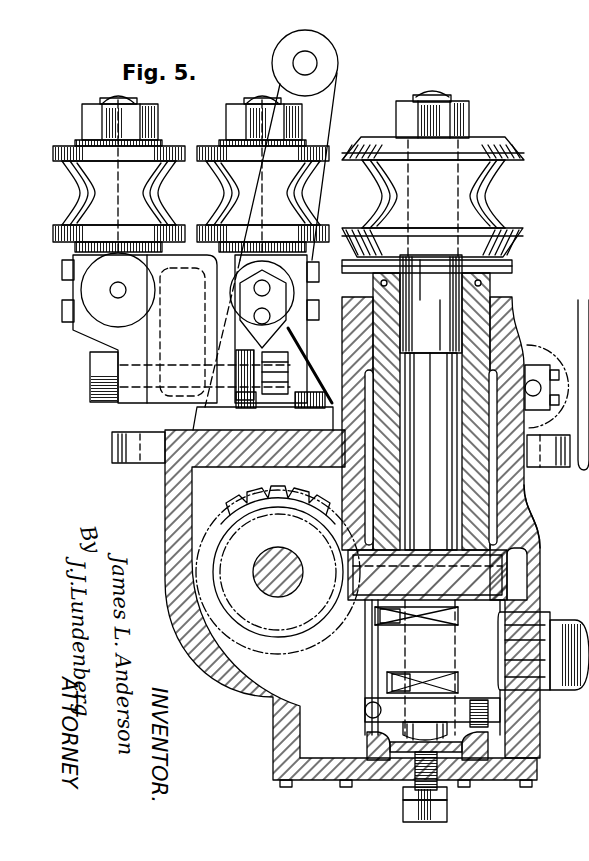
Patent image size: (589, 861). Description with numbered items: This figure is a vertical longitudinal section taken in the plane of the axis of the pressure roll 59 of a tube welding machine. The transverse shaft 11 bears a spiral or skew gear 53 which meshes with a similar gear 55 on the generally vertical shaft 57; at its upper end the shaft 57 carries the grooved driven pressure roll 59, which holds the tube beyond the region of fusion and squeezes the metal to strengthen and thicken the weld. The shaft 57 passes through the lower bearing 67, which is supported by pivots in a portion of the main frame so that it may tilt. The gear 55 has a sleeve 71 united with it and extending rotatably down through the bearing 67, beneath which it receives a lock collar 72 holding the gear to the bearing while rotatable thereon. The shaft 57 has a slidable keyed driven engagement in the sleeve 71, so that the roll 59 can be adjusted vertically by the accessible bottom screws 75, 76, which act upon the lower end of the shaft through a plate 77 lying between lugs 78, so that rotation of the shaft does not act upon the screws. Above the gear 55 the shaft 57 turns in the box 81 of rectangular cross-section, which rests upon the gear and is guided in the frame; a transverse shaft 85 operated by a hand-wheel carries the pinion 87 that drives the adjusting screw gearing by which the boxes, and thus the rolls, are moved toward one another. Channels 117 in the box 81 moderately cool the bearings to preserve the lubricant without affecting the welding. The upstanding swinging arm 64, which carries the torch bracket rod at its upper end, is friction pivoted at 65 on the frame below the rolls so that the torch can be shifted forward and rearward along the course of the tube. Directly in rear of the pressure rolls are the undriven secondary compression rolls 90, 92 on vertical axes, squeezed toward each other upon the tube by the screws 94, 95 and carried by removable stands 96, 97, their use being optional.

The transverse shaft 11 is at (255, 584).
The spiral gear 53 is at (252, 500).
The spiral gear 55 is at (483, 580).
The vertical shaft 57 is at (500, 507).
The pressure roll 59 is at (500, 192).
The swinging arm 64 is at (323, 110).
The friction pivot 65 is at (288, 337).
The lower bearing 67 is at (368, 663).
The sleeve 71 is at (385, 647).
The lock collar 72 is at (482, 715).
The bottom screw 75 is at (450, 812).
The bottom screw 76 is at (537, 540).
The plate 77 is at (414, 762).
The lug 78 is at (367, 742).
The box 81 is at (483, 310).
The transverse shaft 85 is at (534, 380).
The pinion 87 is at (522, 352).
The secondary compression roll 90 is at (308, 193).
The secondary compression roll 92 is at (157, 192).
The screw 94 is at (297, 287).
The screw 95 is at (148, 302).
The removable stand 96 is at (247, 353).
The removable stand 97 is at (127, 337).
The channel 117 is at (398, 298).